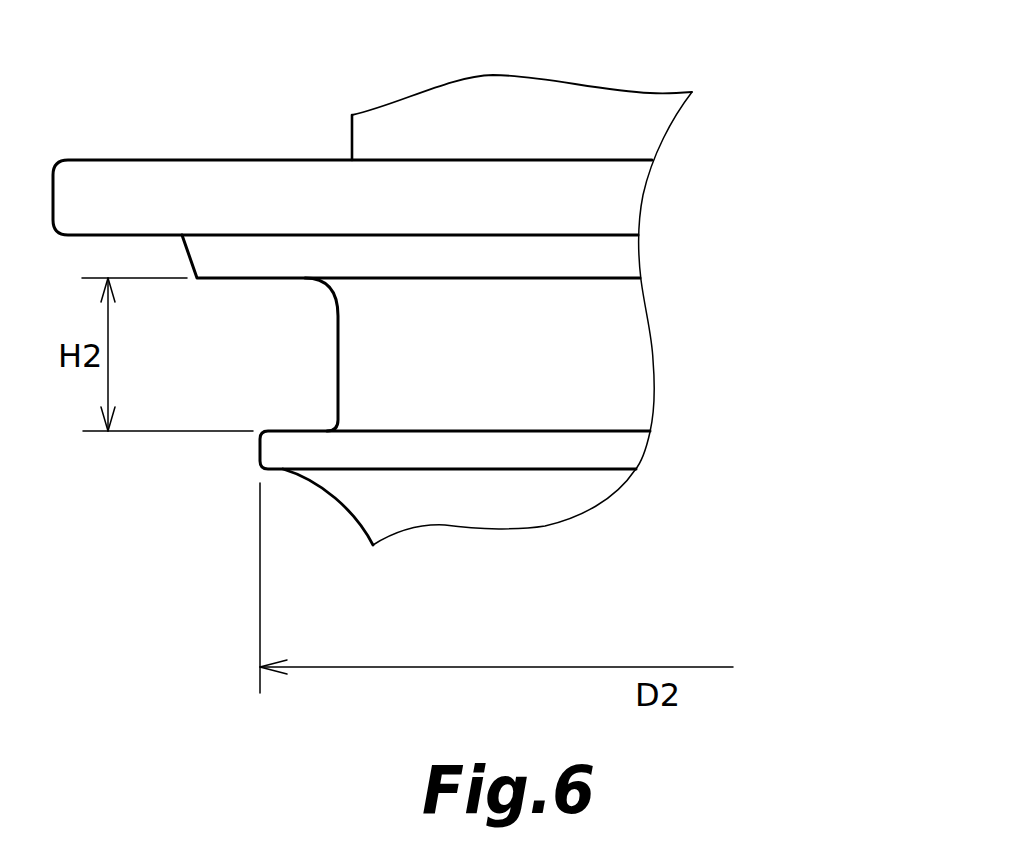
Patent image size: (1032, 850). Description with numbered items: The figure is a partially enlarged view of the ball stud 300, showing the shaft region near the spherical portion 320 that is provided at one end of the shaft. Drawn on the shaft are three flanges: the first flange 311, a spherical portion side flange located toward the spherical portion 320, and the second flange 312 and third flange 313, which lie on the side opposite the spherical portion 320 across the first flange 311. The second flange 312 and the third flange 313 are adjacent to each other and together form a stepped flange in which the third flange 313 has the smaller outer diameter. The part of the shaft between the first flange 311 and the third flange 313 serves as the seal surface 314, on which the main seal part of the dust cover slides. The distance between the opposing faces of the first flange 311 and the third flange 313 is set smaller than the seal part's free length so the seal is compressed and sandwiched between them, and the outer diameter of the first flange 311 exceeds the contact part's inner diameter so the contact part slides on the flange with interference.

The ball stud 300 is at (758, 125).
The first flange 311 is at (623, 456).
The second flange 312 is at (623, 203).
The third flange 313 is at (623, 259).
The seal surface 314 is at (623, 351).
The spherical portion 320 is at (400, 118).